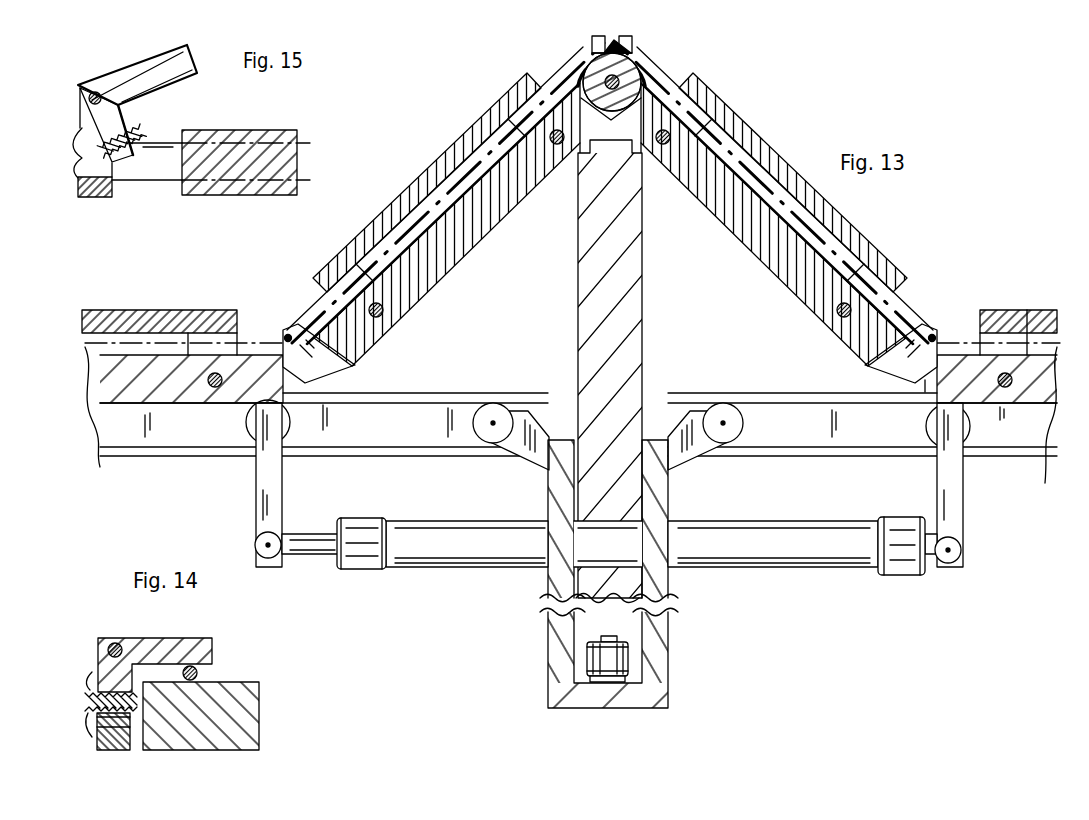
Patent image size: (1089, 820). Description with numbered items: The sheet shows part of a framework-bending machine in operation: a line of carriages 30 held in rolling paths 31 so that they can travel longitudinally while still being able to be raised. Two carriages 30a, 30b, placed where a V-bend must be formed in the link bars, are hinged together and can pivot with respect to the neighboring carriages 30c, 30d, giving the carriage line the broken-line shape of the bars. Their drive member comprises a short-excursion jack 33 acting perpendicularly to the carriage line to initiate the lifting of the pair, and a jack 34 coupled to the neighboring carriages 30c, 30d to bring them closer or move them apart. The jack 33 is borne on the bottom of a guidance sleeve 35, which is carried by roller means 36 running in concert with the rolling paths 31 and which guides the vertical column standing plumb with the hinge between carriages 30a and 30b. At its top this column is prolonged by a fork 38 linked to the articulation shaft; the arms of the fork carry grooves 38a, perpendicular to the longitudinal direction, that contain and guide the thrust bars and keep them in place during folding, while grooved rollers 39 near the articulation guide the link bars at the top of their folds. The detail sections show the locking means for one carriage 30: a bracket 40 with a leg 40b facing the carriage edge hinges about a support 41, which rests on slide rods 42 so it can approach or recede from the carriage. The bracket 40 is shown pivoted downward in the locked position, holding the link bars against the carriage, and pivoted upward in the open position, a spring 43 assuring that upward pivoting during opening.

In FIG. 15, the carriage 30 is at (258, 183).
In FIG. 14, the carriage 30 is at (262, 712).
In FIG. 13, the carriage of a pivoting pair 30a is at (477, 240).
In FIG. 13, the carriage of a pivoting pair 30b is at (786, 268).
In FIG. 13, the neighboring carriage 30c is at (187, 395).
In FIG. 13, the neighboring carriage 30d is at (1030, 390).
In FIG. 13, the rolling paths 31 is at (418, 435).
In FIG. 13, the short-excursion jack 33 is at (630, 662).
In FIG. 13, the jack 34 is at (492, 560).
In FIG. 13, the guidance sleeve 35 is at (668, 505).
In FIG. 13, the roller means 36 is at (488, 445).
In FIG. 13, the fork 38 is at (632, 47).
In FIG. 13, the grooves 38a is at (613, 42).
In FIG. 13, the grooved rollers 39 is at (643, 88).
In FIG. 15, the bracket 40 is at (152, 66).
In FIG. 14, the bracket 40 is at (98, 652).
In FIG. 15, the leg 40b is at (130, 118).
In FIG. 15, the support 41 is at (80, 125).
In FIG. 15, the slide rods 42 is at (168, 168).
In FIG. 15, the spring 43 is at (78, 163).